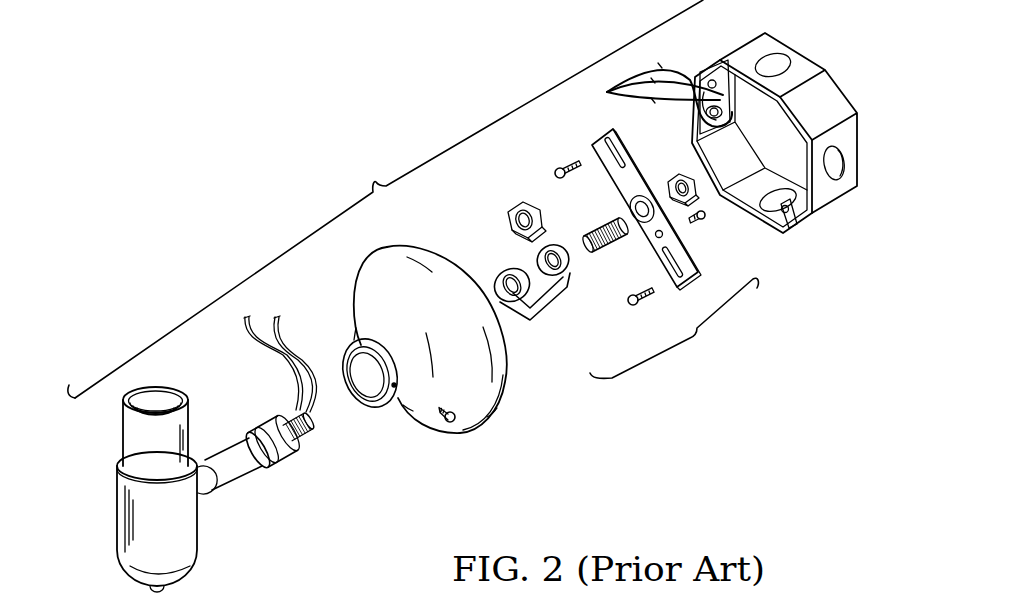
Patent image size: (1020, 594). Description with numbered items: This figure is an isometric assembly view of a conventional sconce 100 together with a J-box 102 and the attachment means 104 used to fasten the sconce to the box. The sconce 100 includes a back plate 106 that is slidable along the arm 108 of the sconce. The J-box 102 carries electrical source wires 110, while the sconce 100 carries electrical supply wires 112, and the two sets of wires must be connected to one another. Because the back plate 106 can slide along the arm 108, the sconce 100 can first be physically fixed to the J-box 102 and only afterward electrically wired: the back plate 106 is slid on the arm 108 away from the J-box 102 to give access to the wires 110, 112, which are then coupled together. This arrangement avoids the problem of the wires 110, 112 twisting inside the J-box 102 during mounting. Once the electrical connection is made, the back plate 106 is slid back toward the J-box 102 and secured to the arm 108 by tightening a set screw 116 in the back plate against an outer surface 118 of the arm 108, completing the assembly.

The sconce 100 is at (272, 536).
The J-box 102 is at (827, 215).
The attachment means 104 is at (695, 334).
The back plate 106 is at (486, 424).
The arm 108 is at (243, 470).
The electrical source wires 110 is at (646, 95).
The electrical supply wires 112 is at (247, 317).
The set screw 116 is at (440, 413).
The outer surface 118 is at (293, 438).